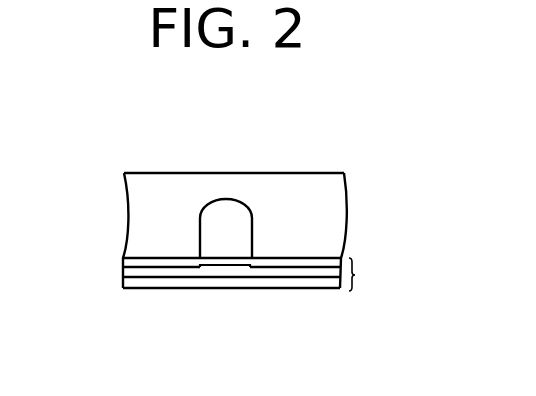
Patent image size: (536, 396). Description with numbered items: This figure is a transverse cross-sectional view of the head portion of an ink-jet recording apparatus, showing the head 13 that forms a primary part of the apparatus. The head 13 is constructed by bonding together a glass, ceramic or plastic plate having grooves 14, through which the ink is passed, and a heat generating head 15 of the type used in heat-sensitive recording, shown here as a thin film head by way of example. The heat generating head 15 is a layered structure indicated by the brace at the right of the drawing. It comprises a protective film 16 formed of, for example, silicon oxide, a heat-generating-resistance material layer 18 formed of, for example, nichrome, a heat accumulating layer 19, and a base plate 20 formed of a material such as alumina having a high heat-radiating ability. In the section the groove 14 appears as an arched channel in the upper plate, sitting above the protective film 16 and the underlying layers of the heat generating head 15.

The head 13 is at (156, 172).
The grooves 14 is at (226, 207).
The heat generating head 15 is at (370, 274).
The protective film 16 is at (122, 259).
The heat-generating-resistance material layer 18 is at (208, 266).
The heat accumulating layer 19 is at (122, 277).
The base plate 20 is at (288, 290).